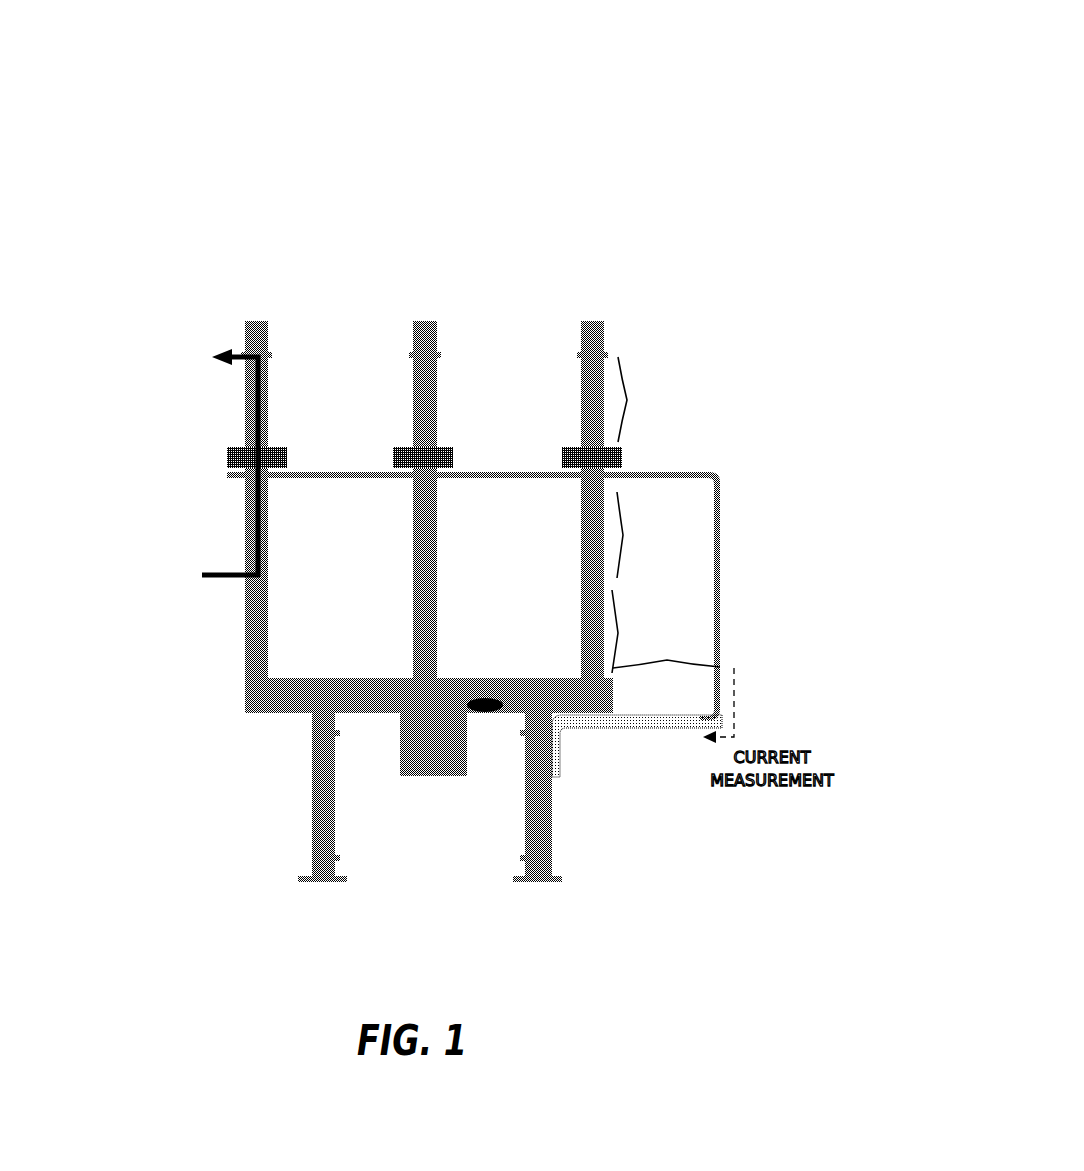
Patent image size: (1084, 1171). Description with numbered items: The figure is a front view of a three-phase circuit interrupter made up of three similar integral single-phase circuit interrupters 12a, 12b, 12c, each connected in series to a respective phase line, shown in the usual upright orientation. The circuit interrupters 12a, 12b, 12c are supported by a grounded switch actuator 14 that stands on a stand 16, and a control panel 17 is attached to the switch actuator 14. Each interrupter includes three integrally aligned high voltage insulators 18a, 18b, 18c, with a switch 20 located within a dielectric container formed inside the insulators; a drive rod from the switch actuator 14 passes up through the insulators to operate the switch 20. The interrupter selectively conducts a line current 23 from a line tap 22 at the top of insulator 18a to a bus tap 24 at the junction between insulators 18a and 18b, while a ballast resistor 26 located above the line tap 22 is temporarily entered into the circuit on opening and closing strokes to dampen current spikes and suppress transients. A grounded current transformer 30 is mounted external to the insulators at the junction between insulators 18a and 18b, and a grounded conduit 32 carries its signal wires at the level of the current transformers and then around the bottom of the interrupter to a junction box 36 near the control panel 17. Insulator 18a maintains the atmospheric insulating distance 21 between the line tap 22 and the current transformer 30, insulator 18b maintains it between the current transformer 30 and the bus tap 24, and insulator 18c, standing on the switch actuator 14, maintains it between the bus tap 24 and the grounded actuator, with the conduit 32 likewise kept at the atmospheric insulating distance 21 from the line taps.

The circuit interrupter 12a is at (237, 177).
The circuit interrupter 12b is at (418, 177).
The circuit interrupter 12c is at (600, 172).
The switch actuator 14 is at (258, 700).
The stand 16 is at (310, 835).
The control panel 17 is at (443, 773).
The insulator 18a is at (267, 402).
The insulator 18b is at (270, 545).
The insulator 18c is at (270, 625).
The switch 20 is at (230, 408).
The atmospheric insulating distance 21 is at (627, 400).
The line tap 22 is at (240, 353).
The line current 23 is at (202, 573).
The bus tap 24 is at (245, 568).
The ballast resistor 26 is at (268, 338).
The current transformer 30 is at (567, 453).
The conduit 32 is at (672, 720).
The junction box 36 is at (557, 777).